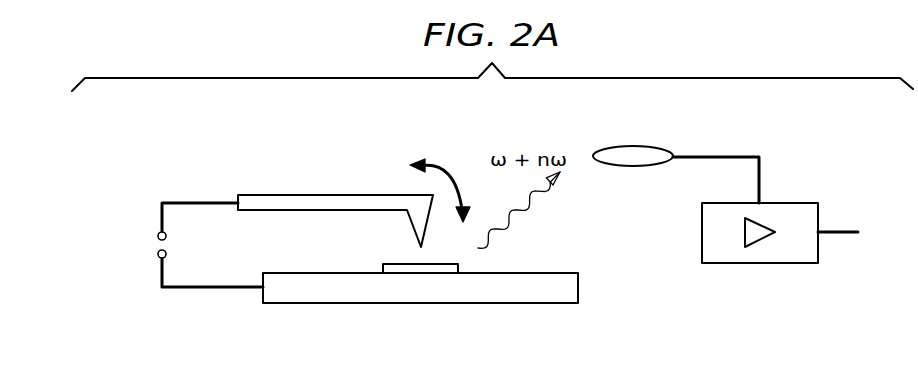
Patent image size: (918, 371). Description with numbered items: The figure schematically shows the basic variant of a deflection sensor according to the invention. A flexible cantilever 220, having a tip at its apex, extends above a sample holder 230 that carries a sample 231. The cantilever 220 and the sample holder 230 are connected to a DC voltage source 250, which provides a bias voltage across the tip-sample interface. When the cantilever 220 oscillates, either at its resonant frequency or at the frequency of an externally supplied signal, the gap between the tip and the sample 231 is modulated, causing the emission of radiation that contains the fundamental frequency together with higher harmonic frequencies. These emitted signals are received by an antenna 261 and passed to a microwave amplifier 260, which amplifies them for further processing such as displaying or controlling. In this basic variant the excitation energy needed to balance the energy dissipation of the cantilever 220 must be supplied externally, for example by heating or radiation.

The flexible cantilever 220 is at (338, 195).
The sample holder 230 is at (338, 303).
The sample 231 is at (410, 273).
The DC voltage source 250 is at (158, 256).
The microwave amplifier 260 is at (790, 263).
The antenna 261 is at (653, 147).